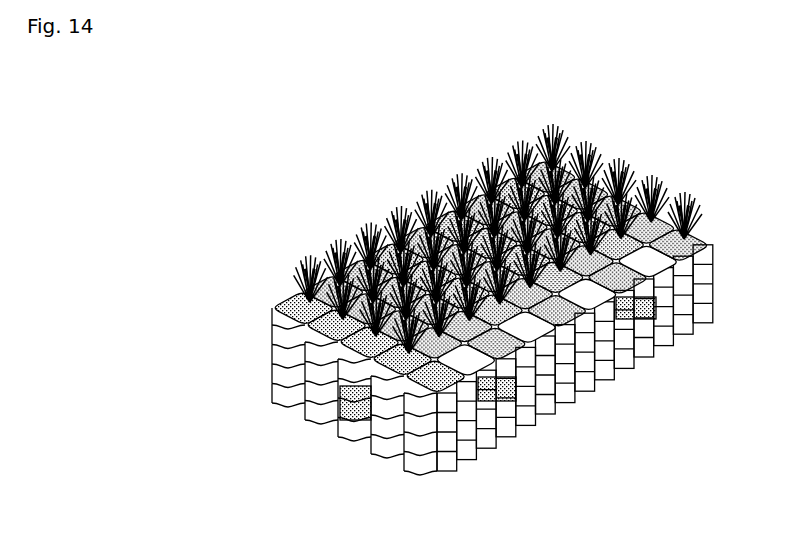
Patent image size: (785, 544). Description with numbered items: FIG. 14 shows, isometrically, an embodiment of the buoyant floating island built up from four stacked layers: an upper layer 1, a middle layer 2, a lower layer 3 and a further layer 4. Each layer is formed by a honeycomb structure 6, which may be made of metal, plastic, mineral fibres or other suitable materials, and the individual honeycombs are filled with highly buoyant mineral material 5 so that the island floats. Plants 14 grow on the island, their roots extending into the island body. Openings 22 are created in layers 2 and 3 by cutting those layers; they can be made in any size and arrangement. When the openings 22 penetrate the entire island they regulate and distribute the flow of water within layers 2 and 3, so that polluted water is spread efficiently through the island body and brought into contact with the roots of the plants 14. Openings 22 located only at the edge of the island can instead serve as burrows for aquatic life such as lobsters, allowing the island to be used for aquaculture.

The upper layer 1 is at (245, 305).
The middle layer 2 is at (245, 327).
The lower layer 3 is at (245, 347).
The further layer 4 is at (245, 372).
The highly buoyant mineral material 5 is at (461, 196).
The honeycomb structure 6 is at (412, 462).
The plants 14 is at (383, 229).
The openings 22 is at (340, 392).